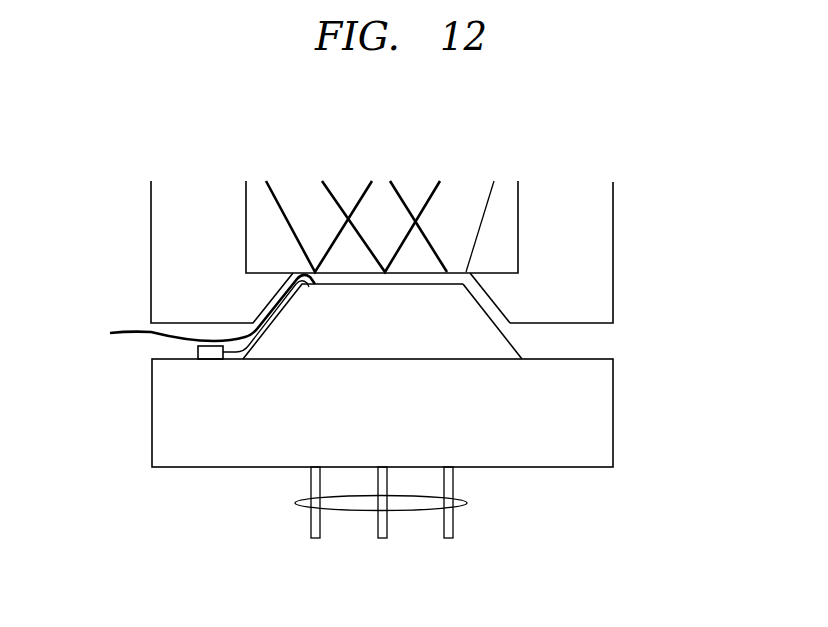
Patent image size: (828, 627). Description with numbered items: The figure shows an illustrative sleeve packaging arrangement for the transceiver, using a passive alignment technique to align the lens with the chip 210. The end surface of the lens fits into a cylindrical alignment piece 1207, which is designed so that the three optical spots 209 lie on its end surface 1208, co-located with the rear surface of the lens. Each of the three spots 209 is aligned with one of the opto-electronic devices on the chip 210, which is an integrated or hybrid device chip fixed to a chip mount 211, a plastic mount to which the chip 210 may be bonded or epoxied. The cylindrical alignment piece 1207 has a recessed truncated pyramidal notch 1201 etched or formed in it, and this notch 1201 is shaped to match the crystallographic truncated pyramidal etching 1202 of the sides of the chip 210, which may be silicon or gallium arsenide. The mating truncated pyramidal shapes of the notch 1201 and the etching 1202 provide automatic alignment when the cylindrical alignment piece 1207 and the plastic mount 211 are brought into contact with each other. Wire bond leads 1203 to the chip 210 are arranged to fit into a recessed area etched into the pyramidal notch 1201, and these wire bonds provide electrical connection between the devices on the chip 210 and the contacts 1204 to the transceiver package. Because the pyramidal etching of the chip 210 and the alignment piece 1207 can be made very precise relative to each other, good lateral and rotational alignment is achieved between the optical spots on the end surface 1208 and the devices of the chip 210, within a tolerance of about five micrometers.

The optical spots 209 is at (500, 178).
The chip 210 is at (401, 330).
The chip mount 211 is at (402, 428).
The truncated pyramidal notch 1201 is at (497, 307).
The truncated pyramidal etching 1202 is at (513, 342).
The wire bond leads 1203 is at (191, 317).
The contacts 1204 is at (468, 503).
The cylindrical alignment piece 1207 is at (600, 217).
The end surface 1208 is at (468, 272).